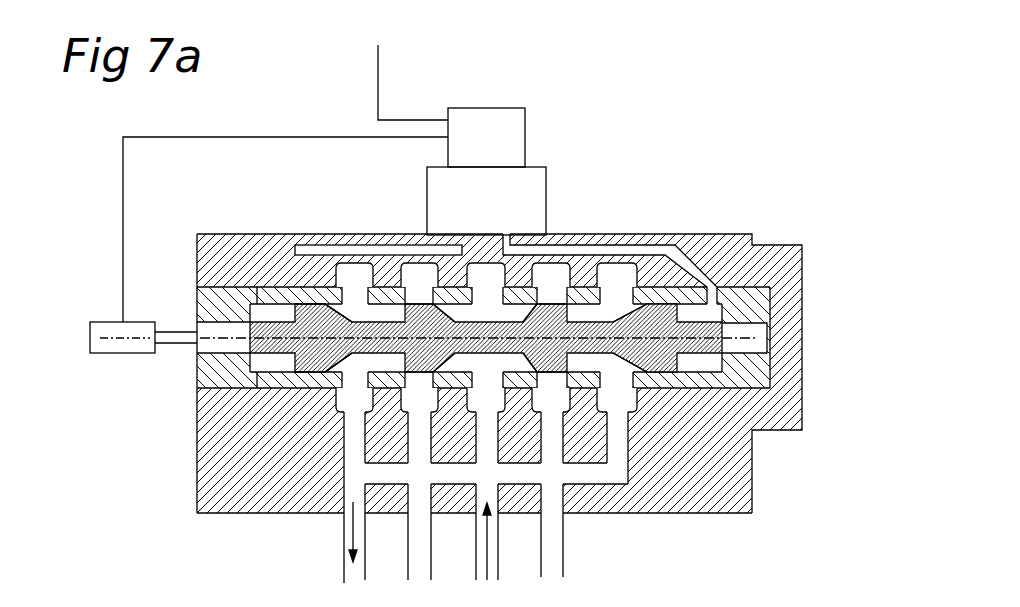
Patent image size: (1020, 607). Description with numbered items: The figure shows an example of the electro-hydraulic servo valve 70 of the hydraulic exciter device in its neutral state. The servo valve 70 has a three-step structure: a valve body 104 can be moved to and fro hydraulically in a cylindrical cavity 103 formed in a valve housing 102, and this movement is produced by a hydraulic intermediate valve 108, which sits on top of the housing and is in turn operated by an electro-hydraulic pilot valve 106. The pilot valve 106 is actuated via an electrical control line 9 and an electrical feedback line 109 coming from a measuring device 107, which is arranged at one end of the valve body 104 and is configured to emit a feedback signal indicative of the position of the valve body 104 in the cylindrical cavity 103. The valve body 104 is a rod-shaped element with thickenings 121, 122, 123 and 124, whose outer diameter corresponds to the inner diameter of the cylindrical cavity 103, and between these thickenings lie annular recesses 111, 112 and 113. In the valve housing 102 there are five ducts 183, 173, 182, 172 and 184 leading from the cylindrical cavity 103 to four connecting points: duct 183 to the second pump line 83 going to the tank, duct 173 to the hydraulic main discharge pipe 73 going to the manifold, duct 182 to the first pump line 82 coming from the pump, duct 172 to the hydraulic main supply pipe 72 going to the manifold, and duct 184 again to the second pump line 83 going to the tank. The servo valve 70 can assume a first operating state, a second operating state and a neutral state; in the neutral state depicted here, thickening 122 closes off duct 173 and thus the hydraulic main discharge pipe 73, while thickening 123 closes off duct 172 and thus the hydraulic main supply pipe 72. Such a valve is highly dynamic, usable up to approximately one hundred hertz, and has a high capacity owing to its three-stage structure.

The electrical control line 9 is at (378, 82).
The electro-hydraulic servo valve 70 is at (114, 168).
The electrical feedback line 109 is at (122, 214).
The electro-hydraulic pilot valve 106 is at (507, 133).
The hydraulic intermediate valve 108 is at (527, 202).
The annular recess 112 is at (468, 315).
The thickening 121 is at (303, 308).
The annular recess 111 is at (367, 313).
The thickening 122 is at (422, 307).
The thickening 123 is at (552, 312).
The annular recess 113 is at (615, 315).
The thickening 124 is at (693, 268).
The measuring device 107 is at (105, 332).
The valve body 104 is at (253, 333).
The cylindrical cavity 103 is at (267, 366).
The valve housing 102 is at (236, 463).
The duct 184 is at (620, 438).
The duct 183 is at (352, 452).
The duct 173 is at (420, 487).
The duct 182 is at (488, 488).
The duct 172 is at (552, 442).
The second pump line 83 is at (345, 583).
The hydraulic main discharge pipe 73 is at (420, 558).
The first pump line 82 is at (487, 577).
The hydraulic main supply pipe 72 is at (563, 553).